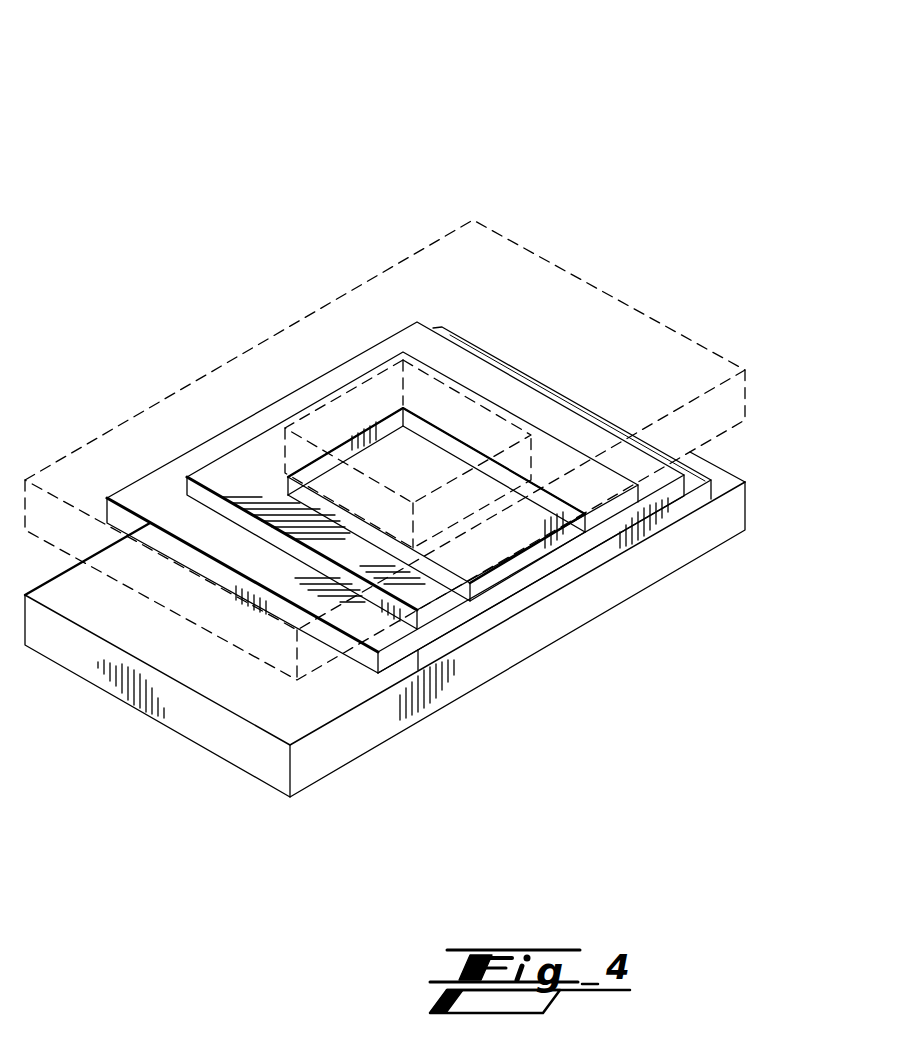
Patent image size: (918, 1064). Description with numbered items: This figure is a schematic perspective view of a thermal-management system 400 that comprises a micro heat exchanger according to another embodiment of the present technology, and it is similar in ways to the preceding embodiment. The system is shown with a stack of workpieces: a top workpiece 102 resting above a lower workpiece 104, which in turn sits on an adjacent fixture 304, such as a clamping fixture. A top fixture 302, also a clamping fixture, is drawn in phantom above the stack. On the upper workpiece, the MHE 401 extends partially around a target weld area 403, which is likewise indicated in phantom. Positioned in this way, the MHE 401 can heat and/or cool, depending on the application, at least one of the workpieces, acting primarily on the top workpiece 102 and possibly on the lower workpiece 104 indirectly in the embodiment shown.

The thermal-management system 400 is at (412, 410).
The top fixture 302 is at (301, 320).
The target weld area 403 is at (478, 392).
The micro heat exchanger 401 is at (435, 608).
The top workpiece 102 is at (490, 603).
The lower workpiece 104 is at (560, 585).
The fixture 304 is at (657, 583).